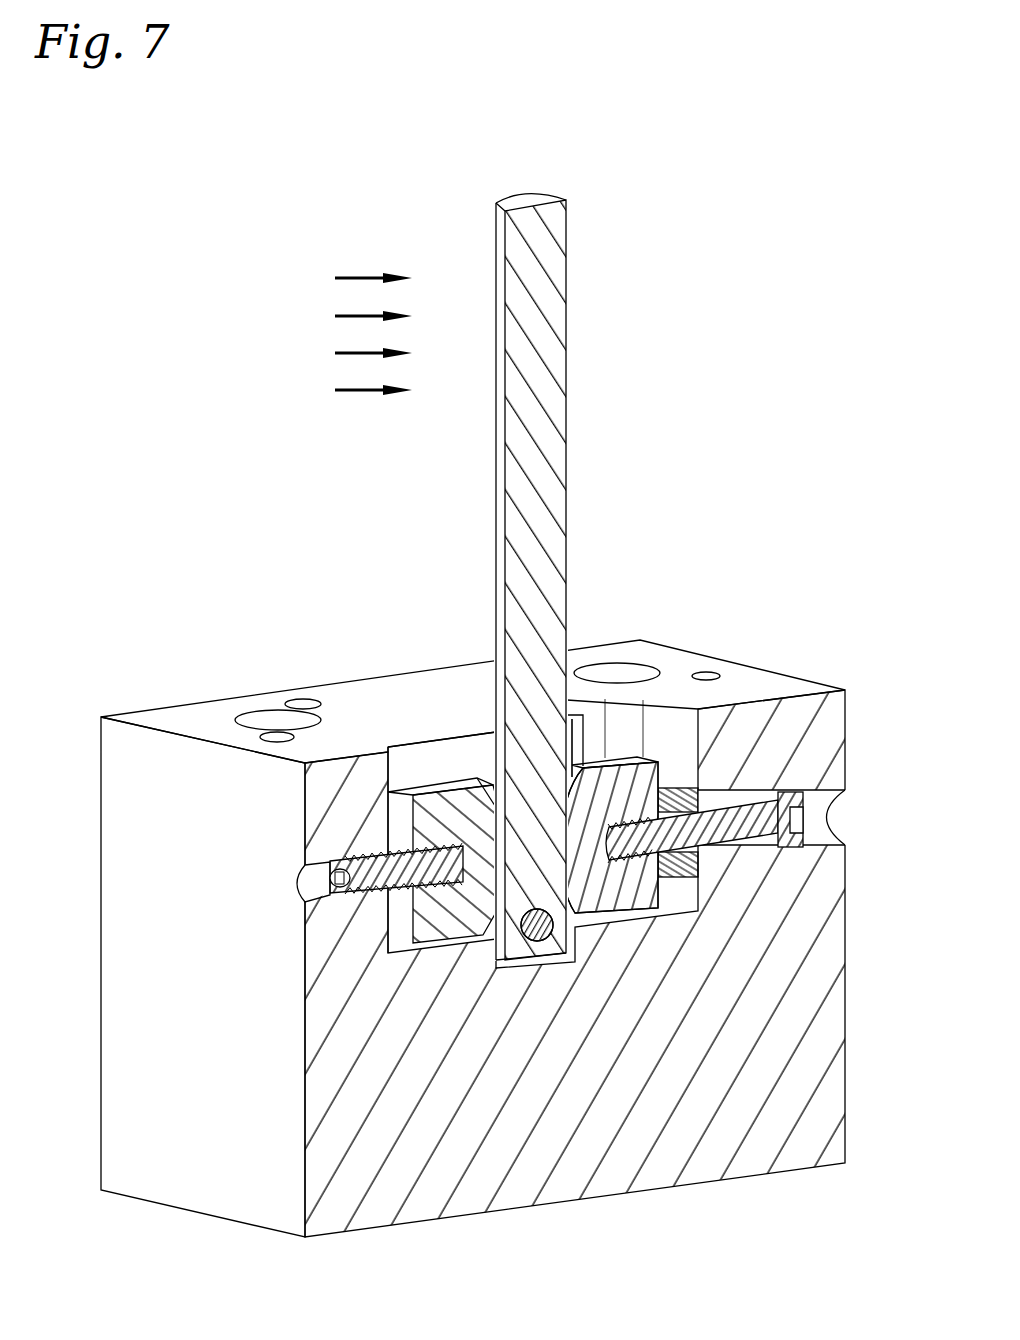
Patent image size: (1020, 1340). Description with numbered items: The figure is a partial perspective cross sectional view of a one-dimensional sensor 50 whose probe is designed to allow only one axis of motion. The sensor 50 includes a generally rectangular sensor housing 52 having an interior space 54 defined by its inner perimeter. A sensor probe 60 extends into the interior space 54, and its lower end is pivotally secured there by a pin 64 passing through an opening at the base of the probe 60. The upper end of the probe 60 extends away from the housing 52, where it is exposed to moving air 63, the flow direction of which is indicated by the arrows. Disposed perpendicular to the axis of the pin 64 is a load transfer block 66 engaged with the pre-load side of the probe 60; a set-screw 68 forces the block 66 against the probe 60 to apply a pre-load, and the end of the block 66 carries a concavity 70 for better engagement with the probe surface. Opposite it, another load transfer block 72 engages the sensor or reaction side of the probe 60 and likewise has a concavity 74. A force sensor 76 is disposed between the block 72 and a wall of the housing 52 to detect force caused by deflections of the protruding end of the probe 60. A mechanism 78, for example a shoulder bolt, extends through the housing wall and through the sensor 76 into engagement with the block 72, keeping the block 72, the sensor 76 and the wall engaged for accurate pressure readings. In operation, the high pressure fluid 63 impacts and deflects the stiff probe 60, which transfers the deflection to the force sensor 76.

The one-dimensional sensor 50 is at (507, 730).
The sensor housing 52 is at (755, 680).
The interior space 54 is at (630, 733).
The sensor probe 60 is at (566, 330).
The moving air 63 is at (350, 277).
The pin 64 is at (537, 932).
The load transfer block 66 is at (443, 930).
The set-screw 68 is at (366, 887).
The concavity 70 is at (487, 777).
The load transfer block 72 is at (627, 900).
The concavity 74 is at (573, 777).
The force sensor 76 is at (680, 880).
The mechanism 78 is at (737, 833).